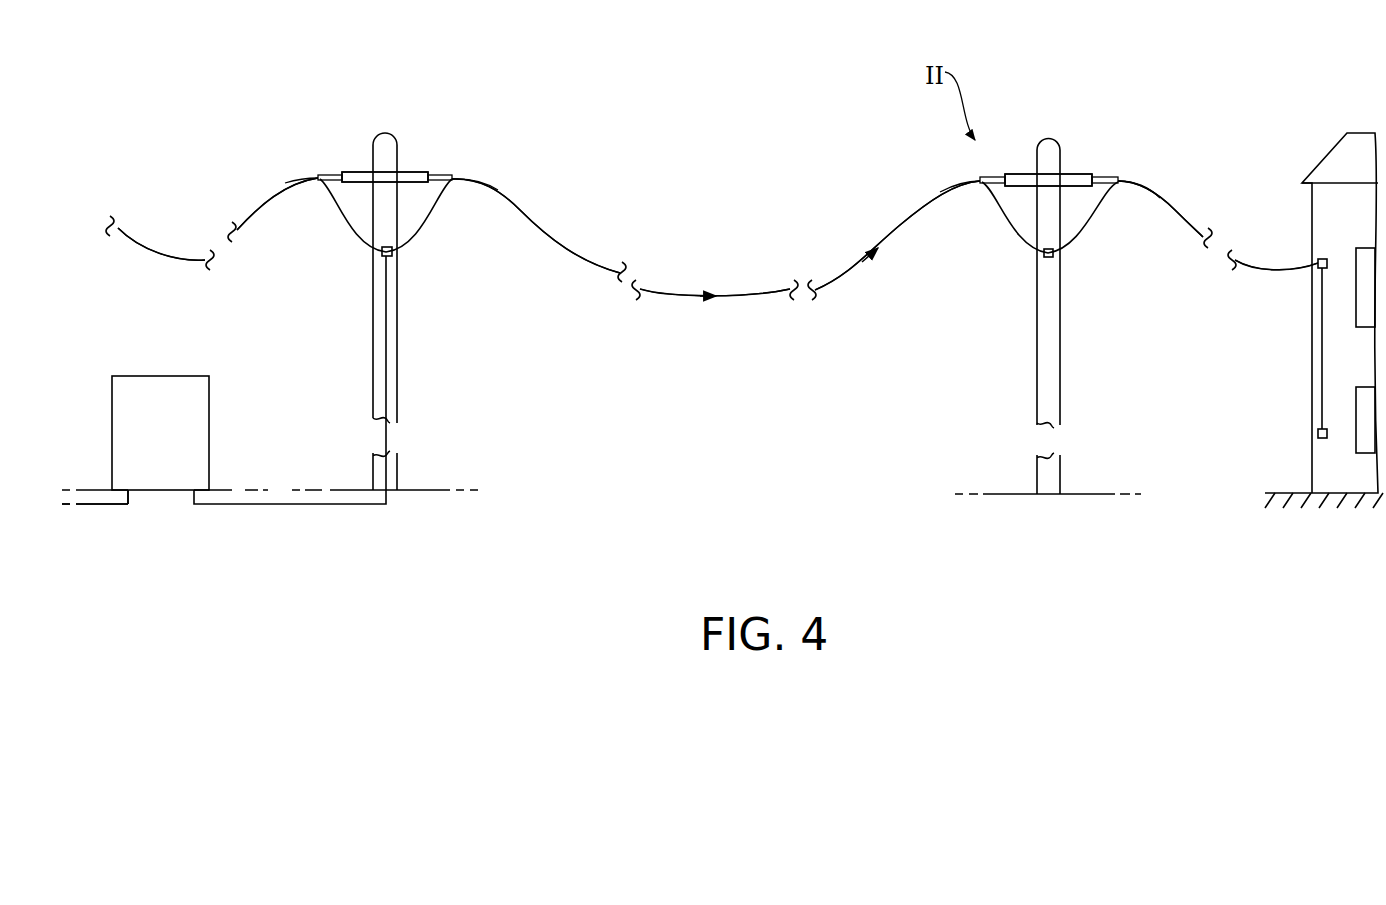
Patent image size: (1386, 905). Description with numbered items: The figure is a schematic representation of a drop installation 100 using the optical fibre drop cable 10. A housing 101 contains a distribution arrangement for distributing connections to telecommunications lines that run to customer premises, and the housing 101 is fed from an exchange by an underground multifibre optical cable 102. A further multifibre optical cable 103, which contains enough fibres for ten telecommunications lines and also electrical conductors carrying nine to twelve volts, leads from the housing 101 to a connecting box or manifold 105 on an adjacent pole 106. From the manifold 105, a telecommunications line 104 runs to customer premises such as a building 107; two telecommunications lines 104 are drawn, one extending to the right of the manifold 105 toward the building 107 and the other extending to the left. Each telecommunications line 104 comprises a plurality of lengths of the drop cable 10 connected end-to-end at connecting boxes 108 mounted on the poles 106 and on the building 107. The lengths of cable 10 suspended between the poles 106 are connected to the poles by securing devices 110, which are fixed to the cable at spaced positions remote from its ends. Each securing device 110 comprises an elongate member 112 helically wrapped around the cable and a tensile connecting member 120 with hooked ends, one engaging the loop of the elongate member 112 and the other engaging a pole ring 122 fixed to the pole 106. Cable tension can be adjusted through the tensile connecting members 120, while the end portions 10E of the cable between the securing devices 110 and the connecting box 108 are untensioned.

The optical fibre drop cable 10 is at (714, 303).
The end portions of the cable 10E is at (365, 245).
The drop installation 100 is at (755, 162).
The housing 101 is at (160, 376).
The multifibre optical cable 102 is at (118, 506).
The multifibre optical cable 103 is at (318, 508).
The telecommunications line 104 is at (228, 278).
The manifold 105 is at (392, 256).
The pole 106 is at (398, 365).
The building 107 is at (1318, 477).
The connecting box 108 is at (1054, 258).
The securing device 110 is at (262, 176).
The elongate member 112 is at (300, 182).
The tensile connecting member 120 is at (320, 174).
The pole ring 122 is at (418, 172).